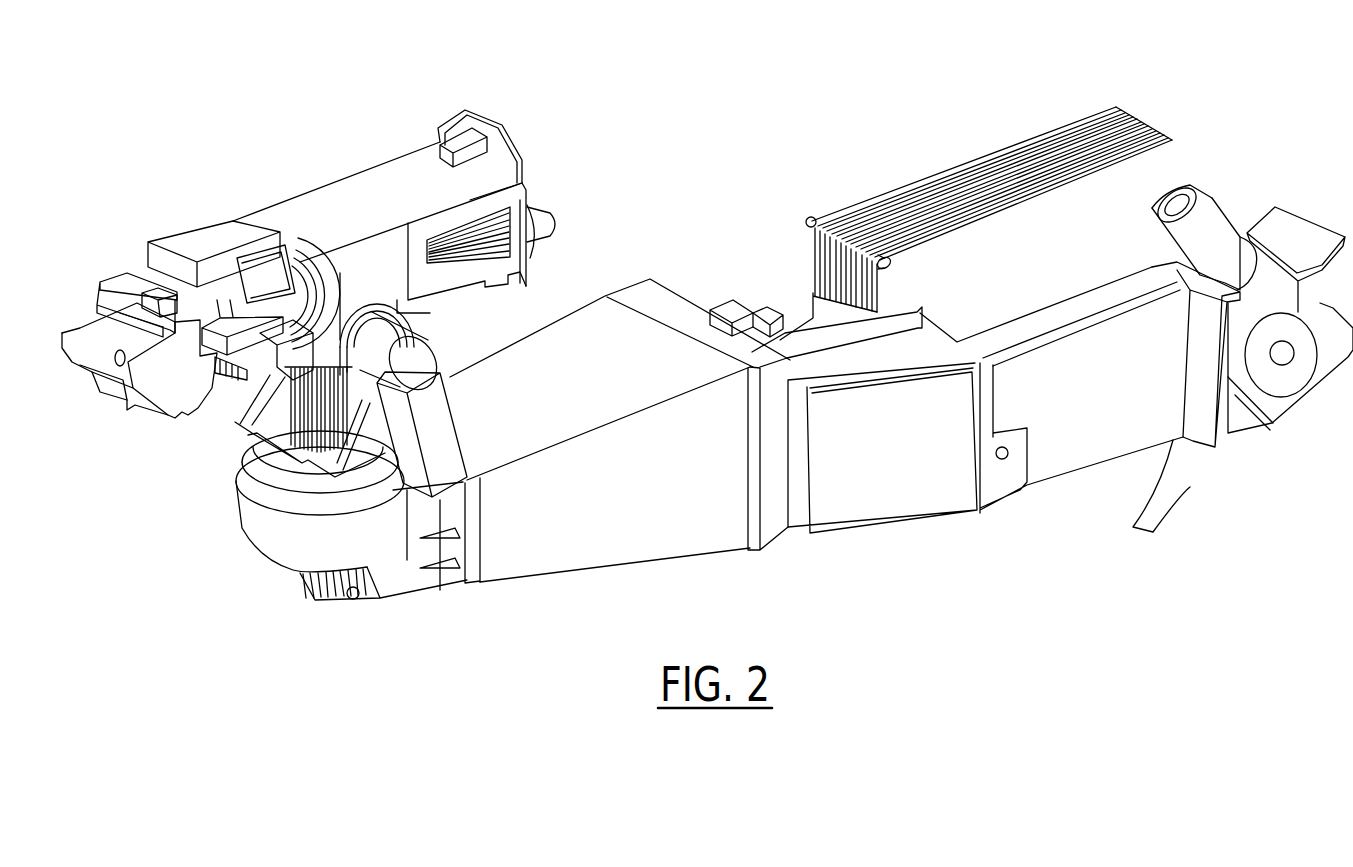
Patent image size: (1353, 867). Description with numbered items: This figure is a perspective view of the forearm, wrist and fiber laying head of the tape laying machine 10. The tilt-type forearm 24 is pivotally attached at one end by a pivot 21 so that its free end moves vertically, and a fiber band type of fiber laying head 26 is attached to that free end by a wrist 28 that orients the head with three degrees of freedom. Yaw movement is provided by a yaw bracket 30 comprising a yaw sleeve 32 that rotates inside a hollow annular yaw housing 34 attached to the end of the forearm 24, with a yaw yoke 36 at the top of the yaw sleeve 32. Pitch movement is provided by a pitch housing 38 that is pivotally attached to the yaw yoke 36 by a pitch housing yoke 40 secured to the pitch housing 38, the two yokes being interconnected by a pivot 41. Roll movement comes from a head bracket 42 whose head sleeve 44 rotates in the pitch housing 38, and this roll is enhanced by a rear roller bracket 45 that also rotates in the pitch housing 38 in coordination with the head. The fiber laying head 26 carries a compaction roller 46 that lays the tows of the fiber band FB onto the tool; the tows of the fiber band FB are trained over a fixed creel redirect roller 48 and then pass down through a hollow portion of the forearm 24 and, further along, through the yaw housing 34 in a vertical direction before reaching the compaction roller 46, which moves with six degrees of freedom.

The machine 10 is at (753, 118).
The pivot 21 is at (1285, 353).
The forearm 24 is at (575, 558).
The fiber laying head 26 is at (138, 293).
The wrist 28 is at (351, 165).
The yaw bracket 30 is at (253, 423).
The yaw sleeve 32 is at (267, 460).
The yaw housing 34 is at (268, 548).
The yaw yoke 36 is at (375, 432).
The pitch housing 38 is at (418, 172).
The pitch housing yoke 40 is at (393, 337).
The pivot 41 is at (407, 347).
The head bracket 42 is at (298, 238).
The head sleeve 44 is at (313, 287).
The rear roller bracket 45 is at (537, 202).
The compaction roller 46 is at (105, 358).
The creel redirect roller 48 is at (888, 264).
The fiber band FB is at (1033, 130).